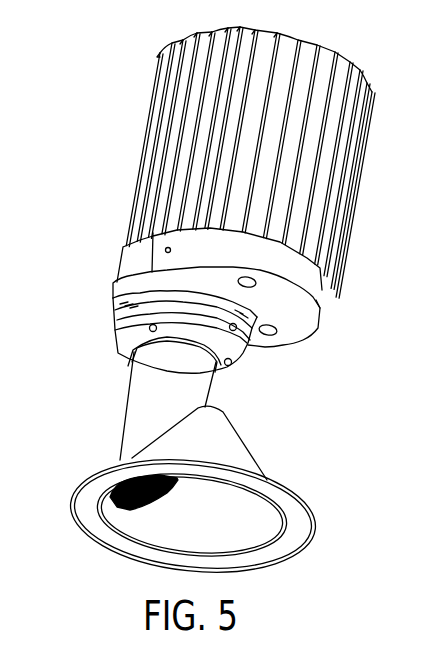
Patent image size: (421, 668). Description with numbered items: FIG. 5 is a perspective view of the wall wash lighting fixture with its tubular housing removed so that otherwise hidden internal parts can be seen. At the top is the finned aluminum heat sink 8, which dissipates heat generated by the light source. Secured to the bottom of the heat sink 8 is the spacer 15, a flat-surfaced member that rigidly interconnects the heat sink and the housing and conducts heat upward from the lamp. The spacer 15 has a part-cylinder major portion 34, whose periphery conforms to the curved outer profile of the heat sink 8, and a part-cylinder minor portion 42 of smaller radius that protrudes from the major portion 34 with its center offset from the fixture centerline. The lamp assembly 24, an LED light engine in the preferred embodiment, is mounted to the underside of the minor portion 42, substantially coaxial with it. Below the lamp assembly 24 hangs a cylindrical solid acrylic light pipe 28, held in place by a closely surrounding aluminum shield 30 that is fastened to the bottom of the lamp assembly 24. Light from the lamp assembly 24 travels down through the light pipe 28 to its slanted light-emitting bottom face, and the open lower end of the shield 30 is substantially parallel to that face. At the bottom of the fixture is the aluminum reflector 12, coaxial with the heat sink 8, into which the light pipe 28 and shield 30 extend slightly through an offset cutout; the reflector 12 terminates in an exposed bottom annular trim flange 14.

The heat sink 8 is at (162, 110).
The minor portion 42 is at (127, 266).
The lamp assembly 24 is at (118, 298).
The major portion 34 is at (318, 302).
The spacer 15 is at (268, 346).
The shield 30 is at (133, 413).
The reflector 12 is at (252, 455).
The light pipe 28 is at (170, 487).
The trim flange 14 is at (92, 537).